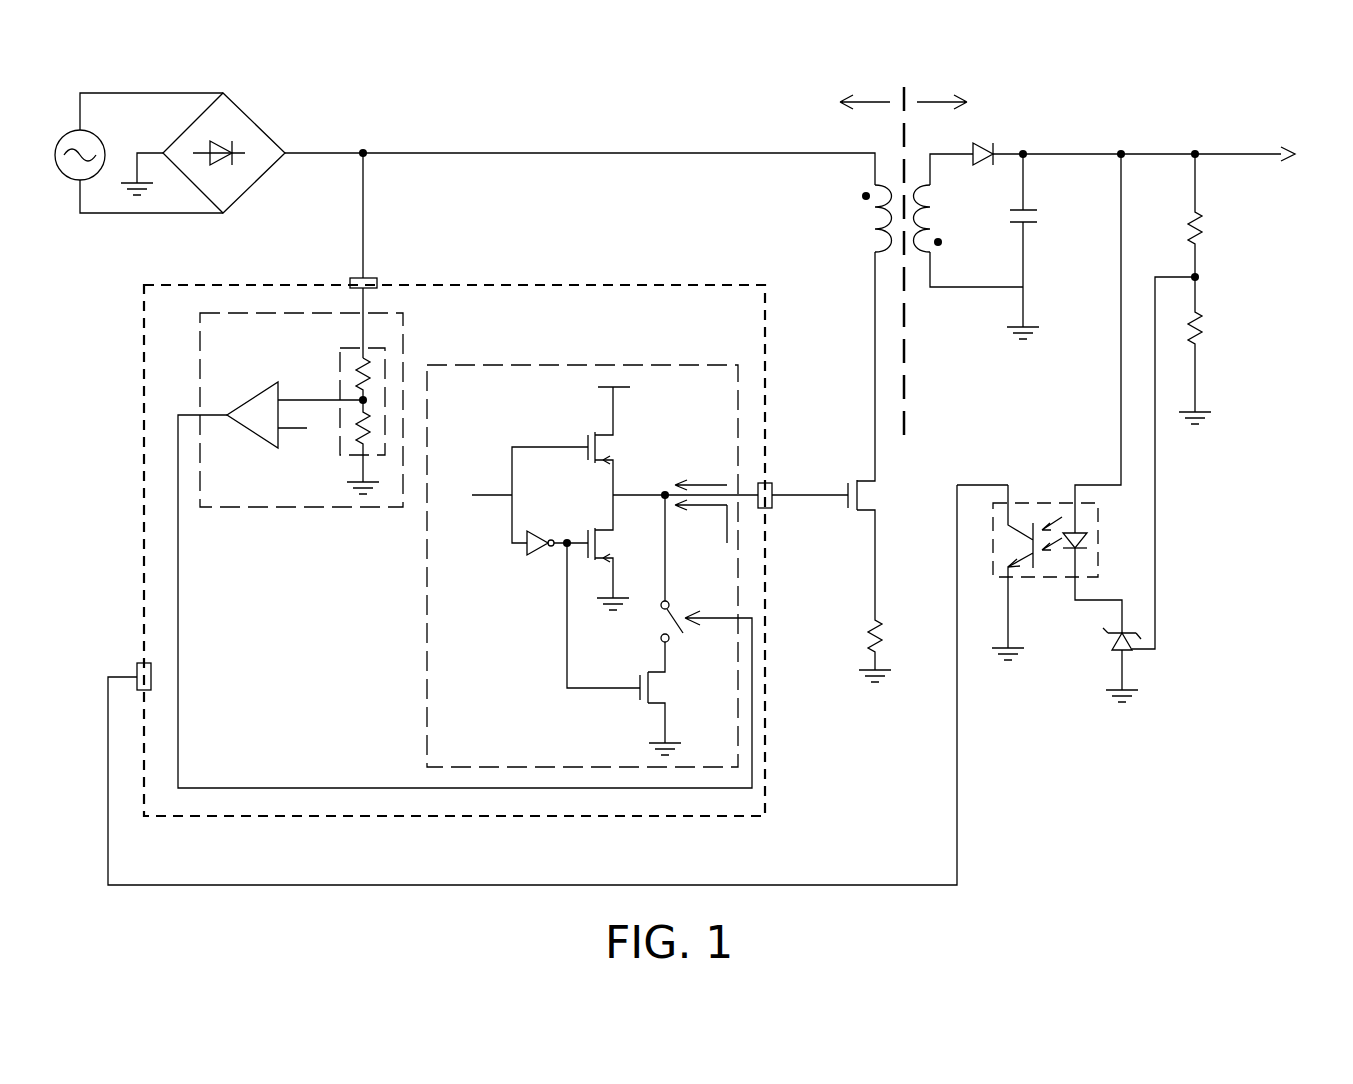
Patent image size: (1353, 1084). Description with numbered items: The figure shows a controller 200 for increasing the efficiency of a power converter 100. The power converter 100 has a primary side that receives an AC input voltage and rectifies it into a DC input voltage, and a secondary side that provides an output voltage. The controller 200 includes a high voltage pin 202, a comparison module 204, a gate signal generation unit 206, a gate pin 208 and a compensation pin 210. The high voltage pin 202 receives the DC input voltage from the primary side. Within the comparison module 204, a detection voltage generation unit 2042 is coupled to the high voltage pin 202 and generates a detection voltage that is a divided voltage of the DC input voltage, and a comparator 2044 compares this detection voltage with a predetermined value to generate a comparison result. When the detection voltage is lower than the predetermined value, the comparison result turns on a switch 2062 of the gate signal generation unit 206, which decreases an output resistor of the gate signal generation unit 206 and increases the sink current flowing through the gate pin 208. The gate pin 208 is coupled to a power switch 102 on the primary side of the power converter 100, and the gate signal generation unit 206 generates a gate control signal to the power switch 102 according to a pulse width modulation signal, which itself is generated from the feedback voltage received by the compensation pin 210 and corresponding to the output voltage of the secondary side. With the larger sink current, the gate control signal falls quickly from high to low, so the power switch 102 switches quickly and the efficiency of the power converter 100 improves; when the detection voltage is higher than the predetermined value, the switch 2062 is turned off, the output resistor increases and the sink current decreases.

The power converter 100 is at (1233, 87).
The power switch 102 is at (864, 493).
The controller 200 is at (535, 283).
The high voltage pin 202 is at (372, 276).
The comparison module 204 is at (283, 510).
The detection voltage generation unit 2042 is at (348, 348).
The comparator 2044 is at (253, 437).
The gate signal generation unit 206 is at (427, 617).
The switch 2062 is at (658, 623).
The gate pin 208 is at (772, 502).
The compensation pin 210 is at (137, 668).